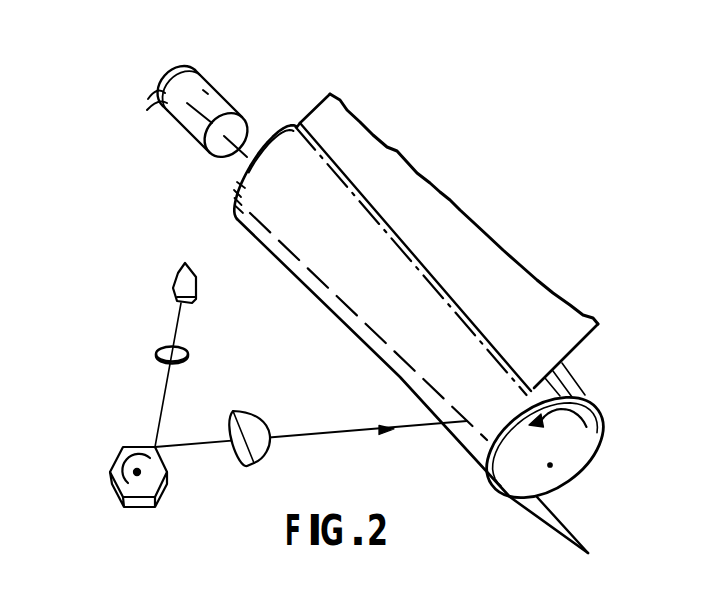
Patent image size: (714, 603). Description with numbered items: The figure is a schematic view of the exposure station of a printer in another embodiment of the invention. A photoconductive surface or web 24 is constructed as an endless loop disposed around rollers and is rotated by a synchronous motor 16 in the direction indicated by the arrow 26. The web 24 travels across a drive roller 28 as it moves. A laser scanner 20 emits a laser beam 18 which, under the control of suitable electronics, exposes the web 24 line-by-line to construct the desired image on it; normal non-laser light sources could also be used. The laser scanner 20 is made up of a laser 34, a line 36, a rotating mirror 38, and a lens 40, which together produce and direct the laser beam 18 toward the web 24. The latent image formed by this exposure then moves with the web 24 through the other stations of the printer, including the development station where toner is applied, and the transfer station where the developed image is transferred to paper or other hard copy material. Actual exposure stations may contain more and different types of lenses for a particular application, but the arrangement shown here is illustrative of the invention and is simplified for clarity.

The synchronous motor 16 is at (232, 101).
The laser beam 18 is at (328, 440).
The laser scanner 20 is at (204, 168).
The photoconductive surface or web 24 is at (502, 263).
The arrow 26 is at (583, 450).
The drive roller 28 is at (231, 202).
The laser 34 is at (174, 285).
The line 36 is at (188, 351).
The rotating mirror 38 is at (118, 462).
The lens 40 is at (250, 412).